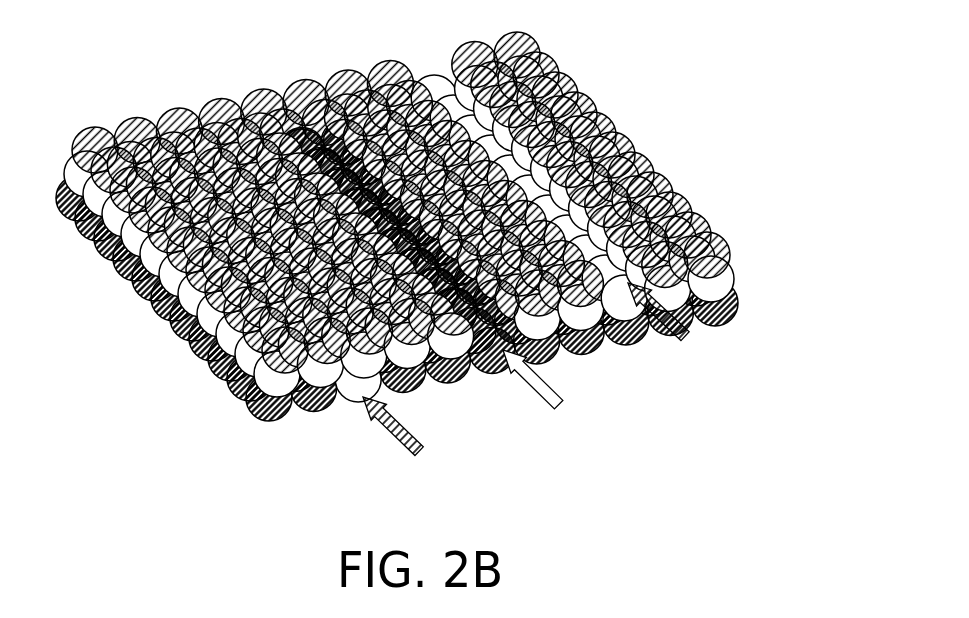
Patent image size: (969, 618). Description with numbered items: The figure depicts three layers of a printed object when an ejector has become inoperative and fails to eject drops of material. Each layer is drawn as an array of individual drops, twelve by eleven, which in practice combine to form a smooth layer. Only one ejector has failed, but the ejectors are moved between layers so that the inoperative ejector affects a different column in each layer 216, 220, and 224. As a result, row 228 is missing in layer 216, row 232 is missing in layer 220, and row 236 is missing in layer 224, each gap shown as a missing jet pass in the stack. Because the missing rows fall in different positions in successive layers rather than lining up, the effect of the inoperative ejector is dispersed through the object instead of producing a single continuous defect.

The layer 216 is at (717, 300).
The layer 220 is at (725, 276).
The layer 224 is at (735, 243).
The row 228 is at (421, 462).
The row 232 is at (559, 415).
The row 236 is at (687, 350).